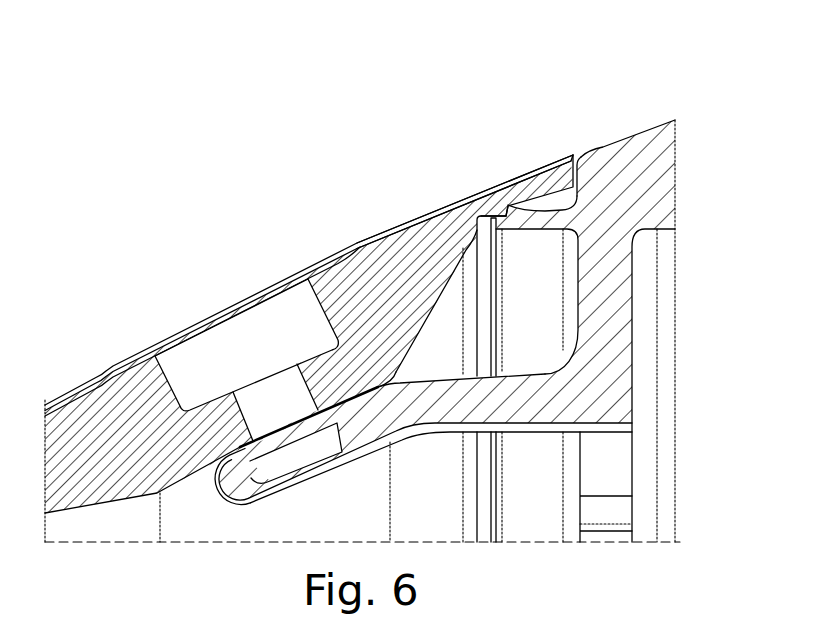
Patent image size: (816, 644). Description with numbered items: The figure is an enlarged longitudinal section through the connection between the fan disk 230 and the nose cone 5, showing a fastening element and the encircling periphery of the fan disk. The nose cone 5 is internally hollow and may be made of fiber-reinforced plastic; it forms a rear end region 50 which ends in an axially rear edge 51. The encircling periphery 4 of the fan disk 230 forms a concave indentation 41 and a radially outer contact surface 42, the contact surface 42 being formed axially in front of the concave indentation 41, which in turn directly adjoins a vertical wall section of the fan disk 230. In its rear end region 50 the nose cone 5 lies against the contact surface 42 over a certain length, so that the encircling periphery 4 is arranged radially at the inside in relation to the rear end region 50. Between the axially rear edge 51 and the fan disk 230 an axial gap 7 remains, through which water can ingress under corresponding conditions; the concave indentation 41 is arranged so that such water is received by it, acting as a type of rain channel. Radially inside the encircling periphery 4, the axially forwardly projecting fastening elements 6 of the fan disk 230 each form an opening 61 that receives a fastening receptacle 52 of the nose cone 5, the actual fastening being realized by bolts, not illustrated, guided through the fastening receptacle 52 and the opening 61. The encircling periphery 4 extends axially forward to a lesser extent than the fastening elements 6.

The encircling periphery 4 is at (532, 212).
The nose cone 5 is at (365, 234).
The fastening elements 6 is at (432, 405).
The axial gap 7 is at (592, 137).
The concave indentation 41 is at (565, 192).
The contact surface 42 is at (505, 192).
The rear end region 50 is at (537, 167).
The axially rear edge 51 is at (590, 145).
The fastening receptacle 52 is at (245, 327).
The opening 61 is at (310, 478).
The fan disk 230 is at (362, 301).